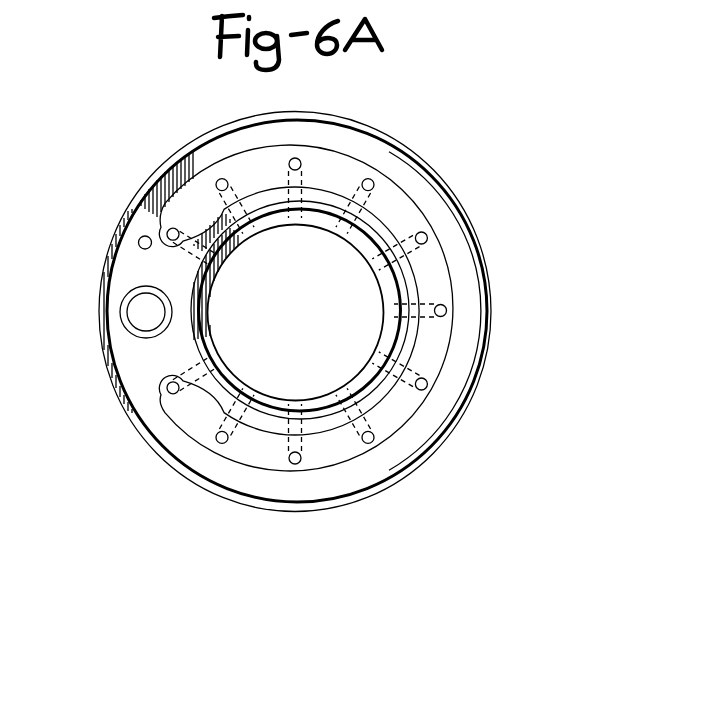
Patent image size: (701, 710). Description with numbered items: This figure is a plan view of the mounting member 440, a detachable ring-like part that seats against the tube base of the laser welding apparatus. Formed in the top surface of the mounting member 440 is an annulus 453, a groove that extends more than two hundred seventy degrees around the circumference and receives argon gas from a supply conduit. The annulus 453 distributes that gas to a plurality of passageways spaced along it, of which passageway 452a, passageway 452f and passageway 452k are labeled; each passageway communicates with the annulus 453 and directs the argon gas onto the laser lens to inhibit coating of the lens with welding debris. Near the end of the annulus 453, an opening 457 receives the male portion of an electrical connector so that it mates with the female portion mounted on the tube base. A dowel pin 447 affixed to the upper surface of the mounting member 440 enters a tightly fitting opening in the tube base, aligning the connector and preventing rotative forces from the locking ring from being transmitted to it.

The mounting member 440 is at (495, 346).
The annulus 453 is at (408, 410).
The passageway 452f is at (445, 304).
The passageway 452a is at (168, 229).
The passageway 452k is at (168, 393).
The dowel pin 447 is at (139, 245).
The opening 457 is at (127, 318).